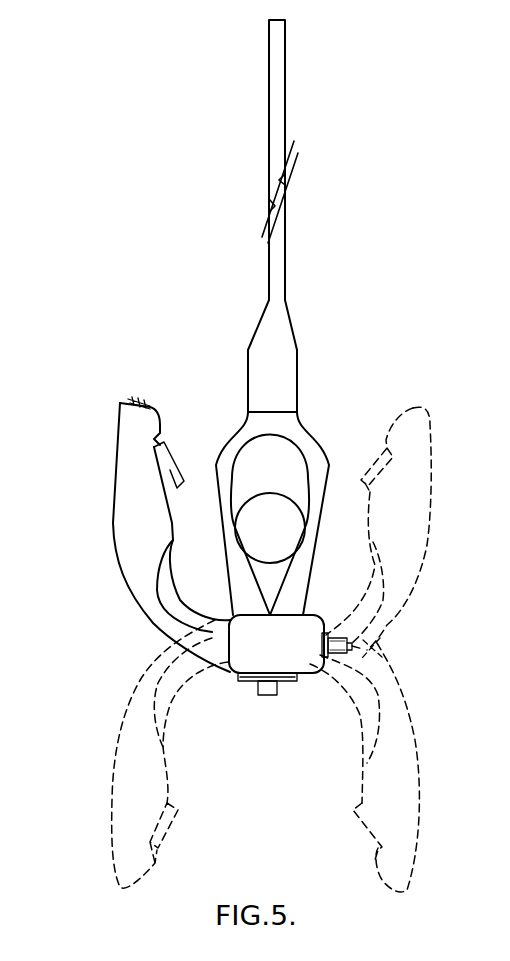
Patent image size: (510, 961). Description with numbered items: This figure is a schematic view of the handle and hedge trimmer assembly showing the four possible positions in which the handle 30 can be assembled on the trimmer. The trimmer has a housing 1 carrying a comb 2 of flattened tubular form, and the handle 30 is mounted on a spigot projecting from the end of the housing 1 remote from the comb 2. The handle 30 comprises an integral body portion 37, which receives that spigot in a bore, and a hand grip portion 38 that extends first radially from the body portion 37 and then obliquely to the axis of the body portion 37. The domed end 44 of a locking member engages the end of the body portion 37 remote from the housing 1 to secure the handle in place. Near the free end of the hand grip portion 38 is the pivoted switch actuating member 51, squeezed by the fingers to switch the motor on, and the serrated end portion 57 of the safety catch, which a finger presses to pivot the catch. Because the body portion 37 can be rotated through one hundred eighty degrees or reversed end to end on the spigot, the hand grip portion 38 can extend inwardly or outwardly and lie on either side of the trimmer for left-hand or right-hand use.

The housing 1 is at (243, 435).
The comb 2 is at (277, 253).
The handle 30 is at (110, 438).
The body portion 37 is at (247, 676).
The hand grip portion 38 is at (136, 500).
The domed end of locking member 44 is at (268, 688).
The switch actuating member 51 is at (175, 474).
The end portion of safety catch element 57 is at (128, 397).